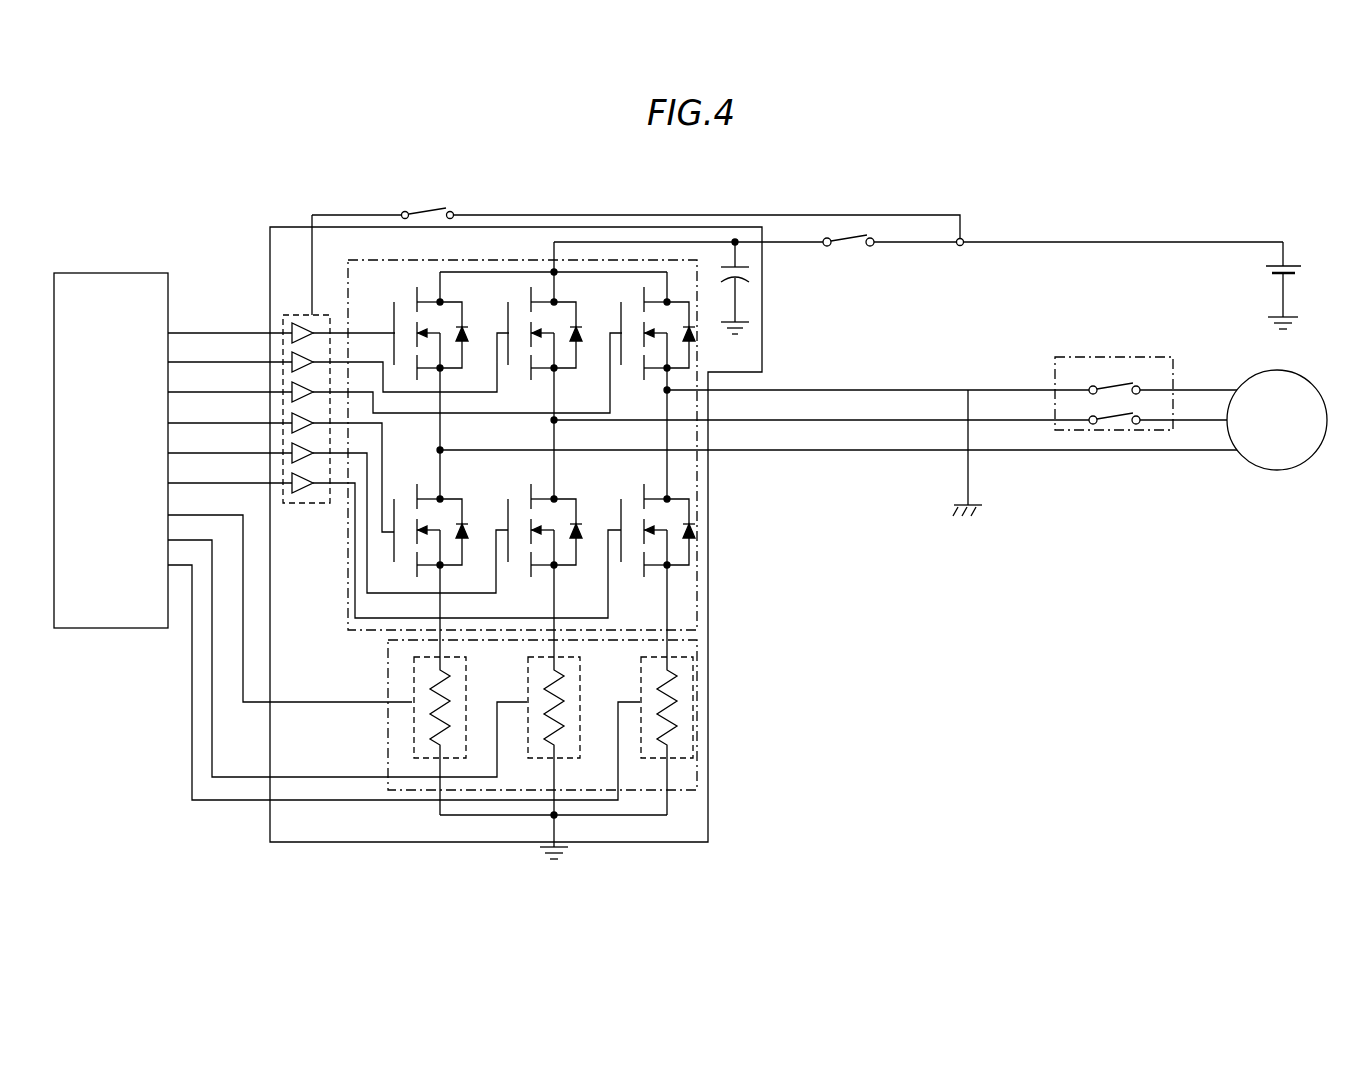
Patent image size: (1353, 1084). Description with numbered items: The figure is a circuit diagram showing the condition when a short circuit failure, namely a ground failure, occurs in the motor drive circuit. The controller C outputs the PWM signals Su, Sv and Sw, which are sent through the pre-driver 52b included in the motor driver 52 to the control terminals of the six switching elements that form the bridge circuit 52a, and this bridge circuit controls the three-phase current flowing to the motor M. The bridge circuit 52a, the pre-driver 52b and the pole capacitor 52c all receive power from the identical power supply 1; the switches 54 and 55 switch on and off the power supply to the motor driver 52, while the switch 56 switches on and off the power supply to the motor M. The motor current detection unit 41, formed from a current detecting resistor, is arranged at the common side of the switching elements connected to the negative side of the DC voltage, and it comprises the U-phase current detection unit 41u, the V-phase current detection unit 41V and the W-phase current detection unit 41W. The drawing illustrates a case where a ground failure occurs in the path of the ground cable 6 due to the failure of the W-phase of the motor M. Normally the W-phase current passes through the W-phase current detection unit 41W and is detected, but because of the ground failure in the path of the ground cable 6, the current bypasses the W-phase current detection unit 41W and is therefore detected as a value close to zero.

The controller C is at (92, 272).
The motor driver 52 is at (708, 758).
The bridge circuit 52a is at (699, 607).
The pre-driver 52b is at (288, 316).
The pole capacitor 52c is at (745, 262).
The switch 55 is at (427, 212).
The switch 54 is at (851, 238).
The power supply 1 is at (1290, 263).
The switch 56 is at (1106, 357).
The motor M is at (1311, 386).
The ground cable 6 is at (971, 470).
The motor current detection unit 41 is at (388, 642).
The U-phase current detection unit 41u is at (412, 735).
The V-phase current detection unit 41V is at (571, 760).
The W-phase current detection unit 41W is at (684, 760).